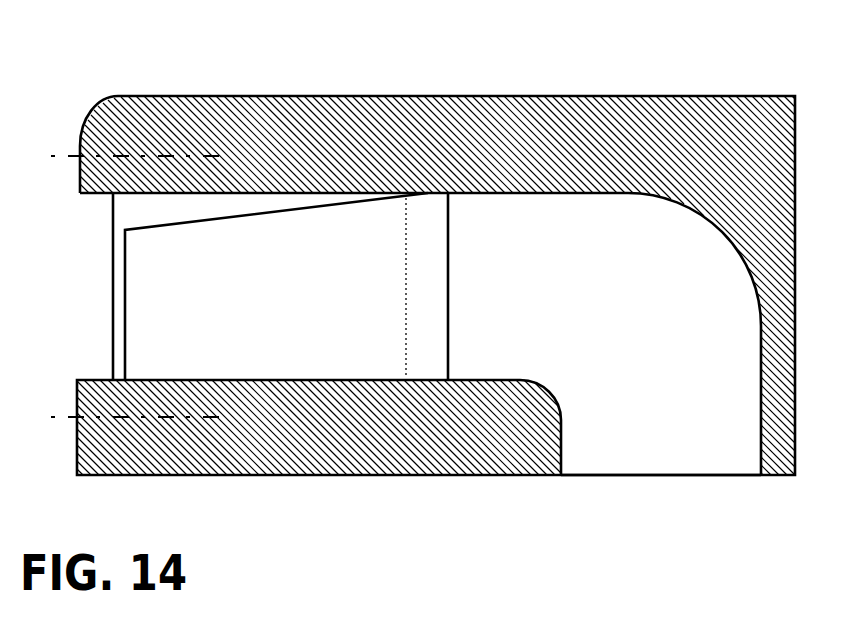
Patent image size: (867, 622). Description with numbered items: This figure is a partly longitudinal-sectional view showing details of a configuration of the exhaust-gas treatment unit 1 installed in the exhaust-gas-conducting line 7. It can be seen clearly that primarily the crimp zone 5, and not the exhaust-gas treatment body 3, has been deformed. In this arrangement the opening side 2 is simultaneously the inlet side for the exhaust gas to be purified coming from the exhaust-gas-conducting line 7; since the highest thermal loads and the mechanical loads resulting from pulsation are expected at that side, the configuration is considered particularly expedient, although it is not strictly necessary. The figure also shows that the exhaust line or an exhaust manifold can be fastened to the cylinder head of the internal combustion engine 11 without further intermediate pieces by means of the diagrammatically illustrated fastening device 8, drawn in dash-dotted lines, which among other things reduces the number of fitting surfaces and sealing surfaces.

The exhaust-gas treatment unit 1 is at (112, 315).
The opening side 2 is at (448, 350).
The exhaust-gas treatment body 3 is at (275, 243).
The crimp zone 5 is at (428, 193).
The exhaust-gas-conducting line 7 is at (642, 465).
The fastening device 8 is at (78, 160).
The internal combustion engine 11 is at (608, 80).